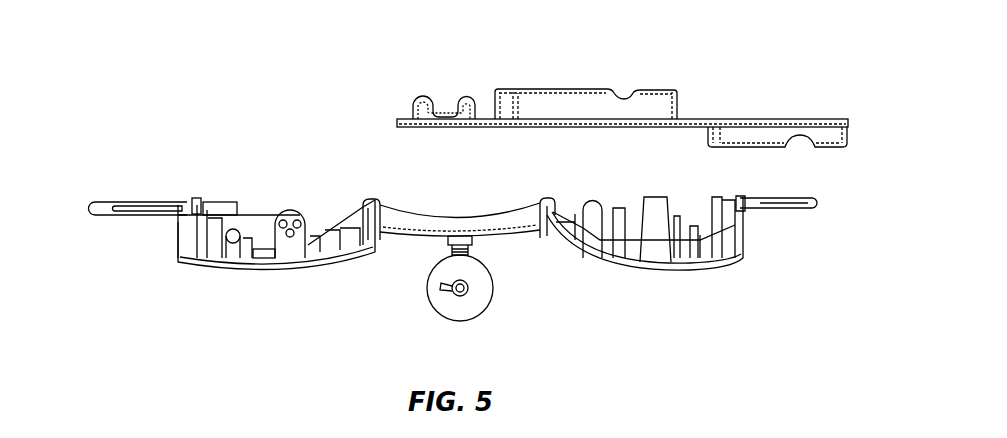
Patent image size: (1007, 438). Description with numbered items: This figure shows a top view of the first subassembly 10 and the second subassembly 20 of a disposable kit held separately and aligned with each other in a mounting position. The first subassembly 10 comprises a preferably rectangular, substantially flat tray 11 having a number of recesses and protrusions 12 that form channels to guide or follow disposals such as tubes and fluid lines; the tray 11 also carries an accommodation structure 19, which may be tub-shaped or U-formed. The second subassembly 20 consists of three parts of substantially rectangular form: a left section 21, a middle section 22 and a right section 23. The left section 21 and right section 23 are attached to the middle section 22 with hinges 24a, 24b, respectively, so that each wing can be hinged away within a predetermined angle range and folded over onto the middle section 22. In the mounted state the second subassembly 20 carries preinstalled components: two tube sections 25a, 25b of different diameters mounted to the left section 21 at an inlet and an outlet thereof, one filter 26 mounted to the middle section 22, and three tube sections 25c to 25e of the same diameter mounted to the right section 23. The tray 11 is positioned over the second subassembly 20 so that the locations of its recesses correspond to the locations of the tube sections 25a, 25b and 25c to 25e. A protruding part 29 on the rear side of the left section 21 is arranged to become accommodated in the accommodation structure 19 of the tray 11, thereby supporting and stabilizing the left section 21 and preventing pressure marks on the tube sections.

The first subassembly 10 is at (862, 166).
The tray 11 is at (748, 120).
The recesses / protrusions 12 is at (557, 102).
The accommodation structure 19 is at (422, 112).
The second subassembly 20 is at (846, 264).
The left section 21 is at (280, 272).
The middle section 22 is at (507, 222).
The right section 23 is at (692, 267).
The hinge 24a is at (367, 203).
The hinge 24b is at (552, 210).
The tube section 25a is at (107, 215).
The tube section 25b is at (148, 208).
The tube section 25c is at (795, 208).
The tube section 25e is at (740, 203).
The filter 26 is at (438, 305).
The protruding part 29 is at (291, 218).